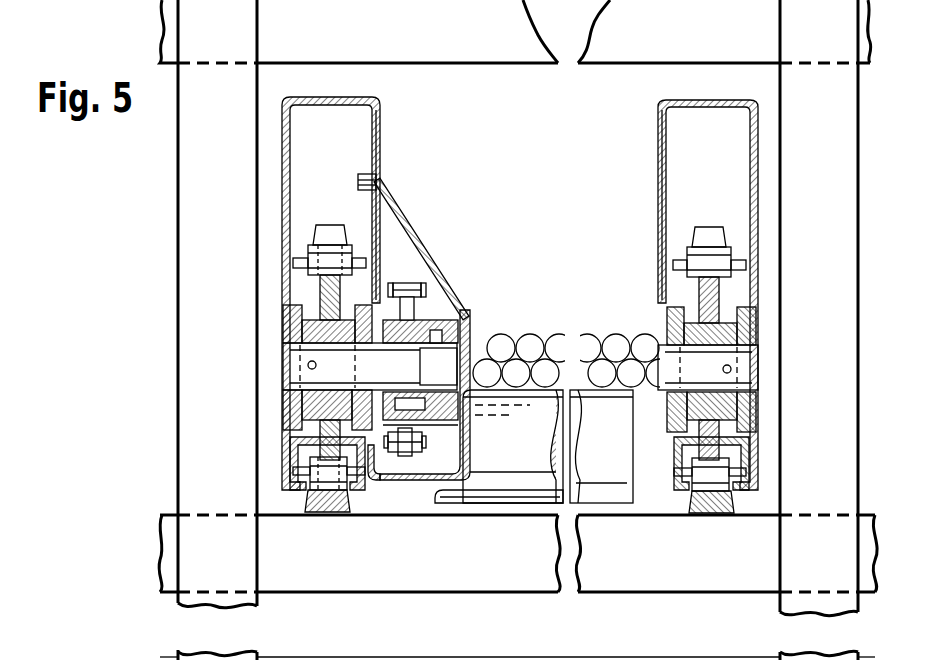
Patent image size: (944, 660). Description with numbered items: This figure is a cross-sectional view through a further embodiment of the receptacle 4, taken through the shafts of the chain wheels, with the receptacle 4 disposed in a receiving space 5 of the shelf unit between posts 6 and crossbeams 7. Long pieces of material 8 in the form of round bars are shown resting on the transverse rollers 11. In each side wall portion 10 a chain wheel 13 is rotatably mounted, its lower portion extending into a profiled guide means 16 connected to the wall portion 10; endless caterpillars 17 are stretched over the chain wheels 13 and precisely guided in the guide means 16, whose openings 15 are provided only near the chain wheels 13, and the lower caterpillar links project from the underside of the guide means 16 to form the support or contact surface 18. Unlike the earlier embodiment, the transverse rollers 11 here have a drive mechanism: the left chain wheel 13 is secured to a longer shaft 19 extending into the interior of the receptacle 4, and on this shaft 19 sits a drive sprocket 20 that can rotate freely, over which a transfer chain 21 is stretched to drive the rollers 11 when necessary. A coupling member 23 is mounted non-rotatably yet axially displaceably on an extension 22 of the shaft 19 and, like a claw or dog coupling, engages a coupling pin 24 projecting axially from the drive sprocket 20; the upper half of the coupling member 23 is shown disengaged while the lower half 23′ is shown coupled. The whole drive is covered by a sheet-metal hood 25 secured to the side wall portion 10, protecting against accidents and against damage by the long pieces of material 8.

The receptacle 4 is at (382, 114).
The receiving space 5 is at (270, 148).
The posts 6 is at (186, 179).
The crossbeams 7 is at (494, 585).
The long pieces of material 8 is at (529, 336).
The side wall portion 10 is at (381, 149).
The transverse rollers 11 is at (518, 478).
The chain wheel 13 is at (322, 290).
The openings 15 is at (286, 436).
The profiled guide means 16 is at (292, 466).
The endless caterpillars 17 is at (325, 235).
The support or contact surface 18 is at (336, 512).
The longer shaft 19 is at (300, 360).
The drive sprocket 20 is at (378, 482).
The transfer chain 21 is at (410, 460).
The extension of the shaft 22 is at (472, 345).
The coupling member 23 is at (468, 310).
The lower half of the coupling member 23′ is at (440, 412).
The coupling pin 24 is at (445, 300).
The sheet-metal hood 25 is at (405, 222).